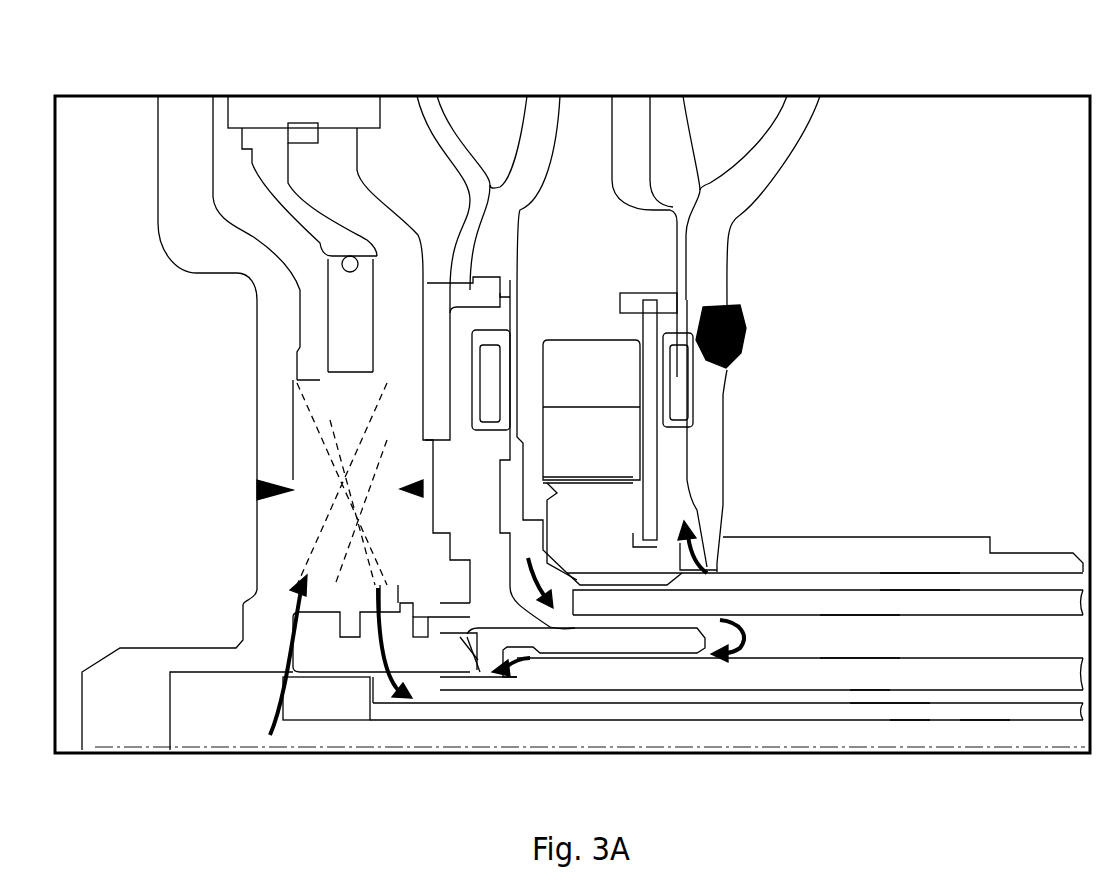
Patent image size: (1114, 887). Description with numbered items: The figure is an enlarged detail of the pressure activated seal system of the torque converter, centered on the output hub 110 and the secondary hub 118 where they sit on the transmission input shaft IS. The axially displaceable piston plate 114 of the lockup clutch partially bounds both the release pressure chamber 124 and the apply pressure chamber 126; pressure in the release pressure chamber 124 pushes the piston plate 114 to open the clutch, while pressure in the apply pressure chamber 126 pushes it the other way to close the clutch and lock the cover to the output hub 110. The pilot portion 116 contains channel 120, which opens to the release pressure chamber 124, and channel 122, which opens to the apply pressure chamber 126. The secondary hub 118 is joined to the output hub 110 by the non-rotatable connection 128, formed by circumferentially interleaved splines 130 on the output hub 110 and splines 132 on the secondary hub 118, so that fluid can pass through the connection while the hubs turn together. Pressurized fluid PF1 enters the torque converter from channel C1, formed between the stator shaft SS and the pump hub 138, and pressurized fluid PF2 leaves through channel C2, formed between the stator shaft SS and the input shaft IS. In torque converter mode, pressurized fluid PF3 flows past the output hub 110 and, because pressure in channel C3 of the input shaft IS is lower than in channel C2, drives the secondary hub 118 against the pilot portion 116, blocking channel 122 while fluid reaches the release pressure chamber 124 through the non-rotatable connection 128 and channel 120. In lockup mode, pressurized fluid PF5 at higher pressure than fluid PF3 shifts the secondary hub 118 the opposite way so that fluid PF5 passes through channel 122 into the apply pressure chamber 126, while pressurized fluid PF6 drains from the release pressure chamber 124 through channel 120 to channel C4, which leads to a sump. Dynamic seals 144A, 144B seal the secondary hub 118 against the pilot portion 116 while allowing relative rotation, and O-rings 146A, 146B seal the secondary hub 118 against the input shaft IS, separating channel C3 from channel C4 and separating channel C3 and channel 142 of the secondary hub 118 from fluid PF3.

The output hub 110 is at (663, 660).
The piston plate 114 is at (272, 180).
The pilot portion 116 is at (255, 510).
The secondary hub 118 is at (305, 647).
The channel 120 is at (323, 403).
The channel 122 is at (323, 525).
The release pressure chamber 124 is at (230, 193).
The apply pressure chamber 126 is at (337, 206).
The non-rotatable connection 128 is at (440, 573).
The teeth or splines 130 is at (475, 628).
The teeth or splines 132 is at (412, 636).
The pump hub 138 is at (1053, 552).
The channel 142 is at (398, 585).
The dynamic seal 144A is at (345, 640).
The dynamic seal 144B is at (434, 615).
The O-ring 146A is at (310, 703).
The O-ring 146B is at (421, 612).
The pressurized fluid PF1 is at (723, 537).
The pressurized fluid PF2 is at (533, 573).
The pressurized fluid PF3 is at (500, 668).
The pressurized fluid PF5 is at (264, 737).
The pressurized fluid PF6 is at (378, 672).
The channel C1 is at (918, 580).
The channel C2 is at (860, 637).
The channel C3 is at (983, 730).
The channel C4 is at (868, 697).
The stator shaft SS is at (978, 597).
The input shaft IS is at (905, 710).